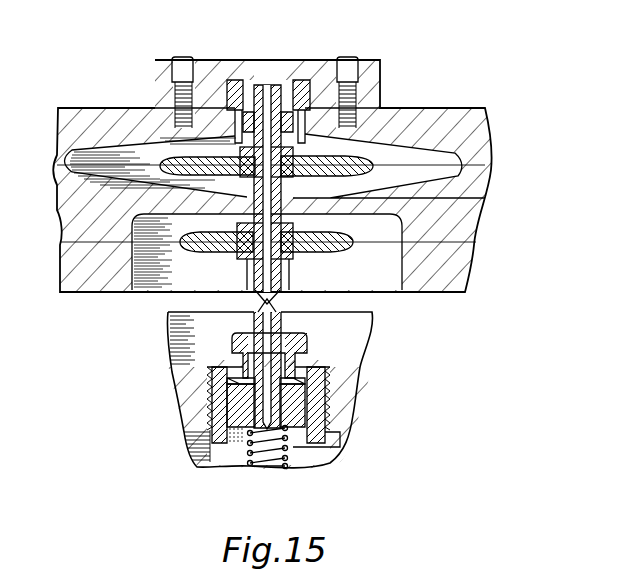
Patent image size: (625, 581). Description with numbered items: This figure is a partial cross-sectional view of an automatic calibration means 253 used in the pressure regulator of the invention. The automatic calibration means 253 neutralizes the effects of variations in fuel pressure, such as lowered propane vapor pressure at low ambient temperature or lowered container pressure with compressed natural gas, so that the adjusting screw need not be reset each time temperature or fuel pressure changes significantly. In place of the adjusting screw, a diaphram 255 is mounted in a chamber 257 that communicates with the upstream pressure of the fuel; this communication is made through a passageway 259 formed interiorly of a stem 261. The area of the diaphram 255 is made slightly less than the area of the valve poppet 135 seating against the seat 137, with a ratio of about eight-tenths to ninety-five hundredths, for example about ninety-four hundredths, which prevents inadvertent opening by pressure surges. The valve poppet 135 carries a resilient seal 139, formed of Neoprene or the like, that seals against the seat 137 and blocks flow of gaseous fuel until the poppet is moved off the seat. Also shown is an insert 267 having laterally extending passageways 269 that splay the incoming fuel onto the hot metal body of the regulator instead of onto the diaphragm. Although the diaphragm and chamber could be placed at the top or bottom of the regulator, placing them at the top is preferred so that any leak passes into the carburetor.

The automatic calibration means 253 is at (166, 435).
The diaphram 255 is at (455, 198).
The chamber 257 is at (353, 215).
The passageway 259 is at (258, 266).
The stem 261 is at (290, 247).
The insert 267 is at (237, 340).
The laterally extending passageways 269 is at (232, 360).
The valve poppet 135 is at (300, 390).
The seat 137 is at (293, 383).
The resilient seal 139 is at (290, 408).